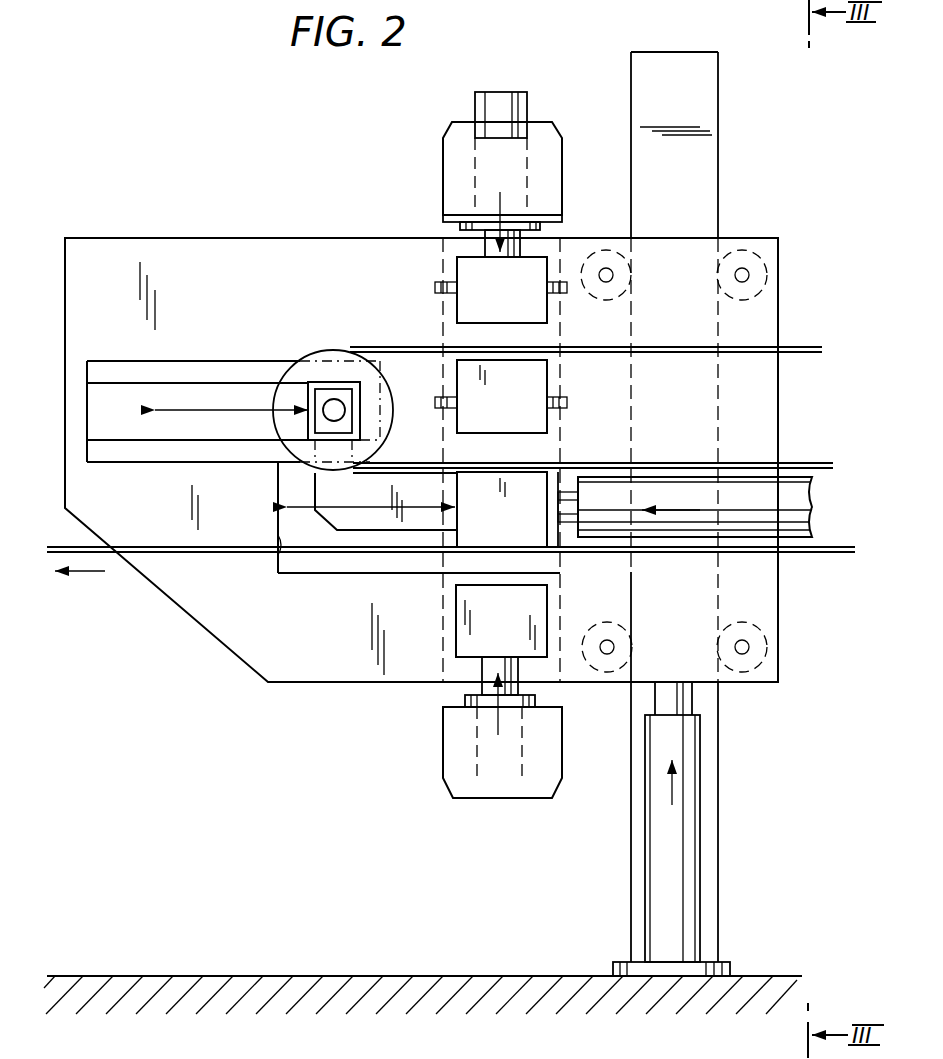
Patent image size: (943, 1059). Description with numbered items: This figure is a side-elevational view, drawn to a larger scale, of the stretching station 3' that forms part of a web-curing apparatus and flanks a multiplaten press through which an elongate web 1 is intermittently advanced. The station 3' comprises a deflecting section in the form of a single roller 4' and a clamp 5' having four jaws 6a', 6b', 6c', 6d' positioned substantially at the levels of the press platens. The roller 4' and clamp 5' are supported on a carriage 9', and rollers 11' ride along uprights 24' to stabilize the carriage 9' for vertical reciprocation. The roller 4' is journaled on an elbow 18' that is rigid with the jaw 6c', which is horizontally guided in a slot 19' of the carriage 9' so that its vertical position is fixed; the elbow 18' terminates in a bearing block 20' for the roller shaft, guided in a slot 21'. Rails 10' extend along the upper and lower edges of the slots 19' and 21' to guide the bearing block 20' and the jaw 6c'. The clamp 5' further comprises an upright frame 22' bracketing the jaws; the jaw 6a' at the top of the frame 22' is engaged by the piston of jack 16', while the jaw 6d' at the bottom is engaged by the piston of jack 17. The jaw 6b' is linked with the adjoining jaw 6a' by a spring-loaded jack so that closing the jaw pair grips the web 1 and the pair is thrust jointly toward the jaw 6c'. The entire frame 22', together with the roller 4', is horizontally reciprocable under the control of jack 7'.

The elongate web 1 is at (165, 553).
The stretching station 3' is at (291, 110).
The deflecting roller 4' is at (333, 381).
The clamp 5' is at (469, 187).
The jaw 6a' is at (501, 290).
The jaw 6b' is at (501, 396).
The jaw 6c' is at (517, 509).
The jaw 6d' is at (501, 621).
The jack 7' is at (714, 507).
The carriage 9' is at (435, 435).
The rails 10' is at (227, 467).
The rollers 11' is at (713, 461).
The jack 16' is at (510, 90).
The jack 17 is at (488, 755).
The elbow 18' is at (391, 517).
The slot 19' is at (253, 563).
The bearing block 20' is at (370, 400).
The slot 21' is at (177, 469).
The upright frame 22' is at (467, 224).
The uprights 24' is at (647, 507).